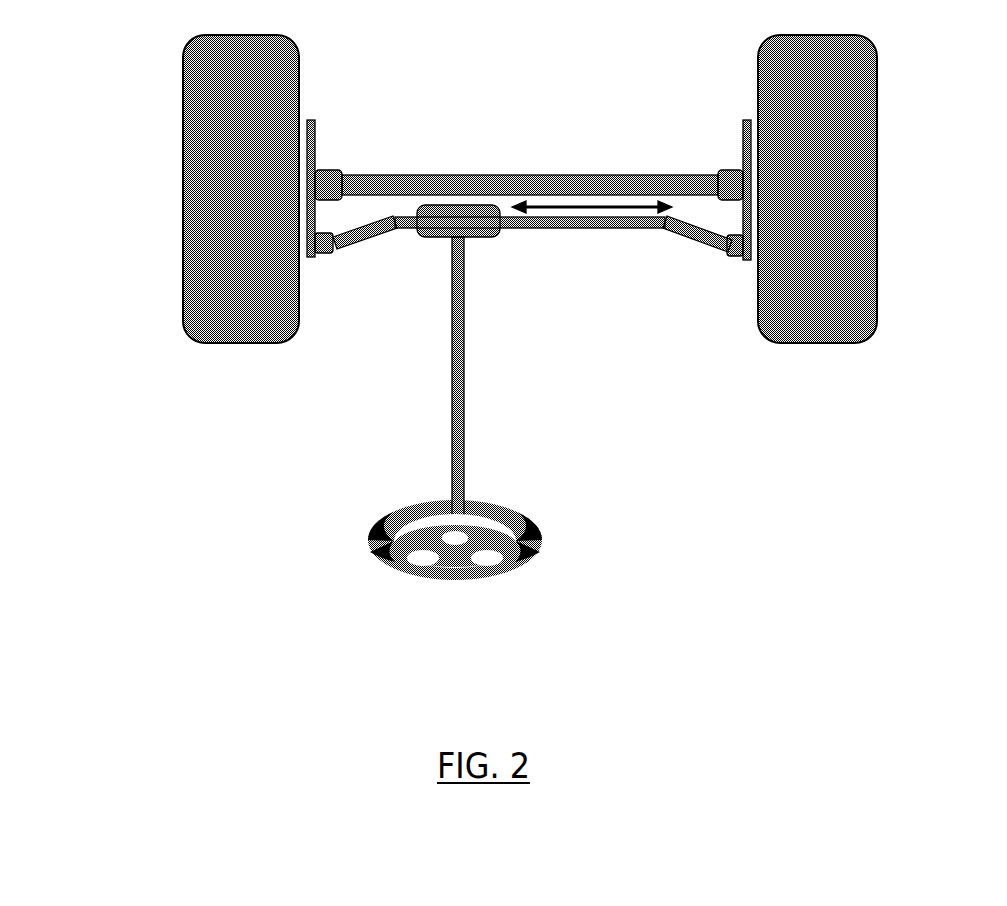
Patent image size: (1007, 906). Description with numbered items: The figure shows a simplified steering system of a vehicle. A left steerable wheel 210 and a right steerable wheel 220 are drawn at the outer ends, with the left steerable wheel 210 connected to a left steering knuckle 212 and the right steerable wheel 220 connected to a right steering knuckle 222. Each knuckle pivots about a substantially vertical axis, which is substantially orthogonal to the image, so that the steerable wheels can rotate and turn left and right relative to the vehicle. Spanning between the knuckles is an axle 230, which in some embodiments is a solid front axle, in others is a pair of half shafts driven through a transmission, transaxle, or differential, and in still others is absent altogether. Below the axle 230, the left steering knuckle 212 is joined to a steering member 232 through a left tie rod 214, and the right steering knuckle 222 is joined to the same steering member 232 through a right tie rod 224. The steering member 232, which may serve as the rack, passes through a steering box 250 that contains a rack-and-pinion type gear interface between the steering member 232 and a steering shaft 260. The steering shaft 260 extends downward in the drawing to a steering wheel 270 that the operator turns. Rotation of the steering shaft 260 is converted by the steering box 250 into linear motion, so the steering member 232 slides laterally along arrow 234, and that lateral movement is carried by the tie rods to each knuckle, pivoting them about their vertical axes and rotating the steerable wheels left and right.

The left steerable wheel 210 is at (180, 127).
The right steerable wheel 220 is at (878, 112).
The left steering knuckle 212 is at (327, 170).
The right steering knuckle 222 is at (740, 172).
The left tie rod 214 is at (362, 243).
The right tie rod 224 is at (688, 232).
The axle 230 is at (550, 175).
The steering member 232 is at (591, 228).
The arrow 234 is at (605, 205).
The steering box 250 is at (475, 242).
The steering shaft 260 is at (465, 450).
The steering wheel 270 is at (530, 518).